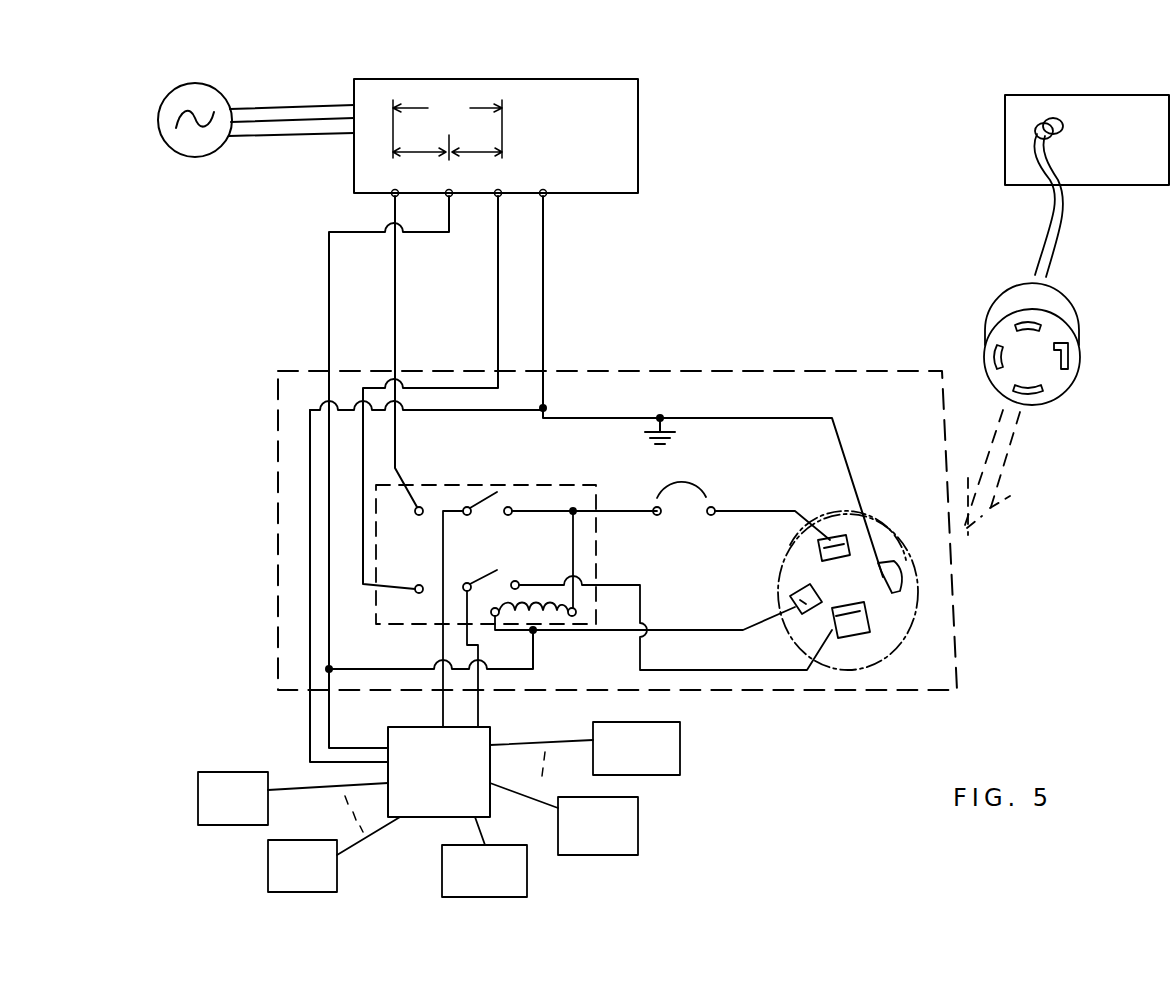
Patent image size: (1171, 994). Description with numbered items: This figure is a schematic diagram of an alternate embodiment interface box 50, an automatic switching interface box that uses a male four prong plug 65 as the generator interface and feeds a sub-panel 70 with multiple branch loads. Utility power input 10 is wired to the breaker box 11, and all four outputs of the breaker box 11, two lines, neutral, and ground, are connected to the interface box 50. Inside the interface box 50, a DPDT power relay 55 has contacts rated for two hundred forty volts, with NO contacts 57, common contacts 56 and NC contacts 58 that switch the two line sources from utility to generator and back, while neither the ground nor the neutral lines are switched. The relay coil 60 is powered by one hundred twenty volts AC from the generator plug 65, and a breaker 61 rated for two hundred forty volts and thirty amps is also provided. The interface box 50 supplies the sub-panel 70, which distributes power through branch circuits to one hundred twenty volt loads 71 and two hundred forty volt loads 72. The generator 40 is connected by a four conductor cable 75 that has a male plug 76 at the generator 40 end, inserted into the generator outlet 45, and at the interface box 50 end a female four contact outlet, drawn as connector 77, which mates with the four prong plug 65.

The utility power input 10 is at (236, 93).
The breaker box 11 is at (580, 70).
The generator 40 is at (1077, 113).
The outlet 45 is at (1073, 122).
The alternate embodiment interface box 50 is at (730, 360).
The DPDT power relay 55 is at (553, 474).
The common contacts 56 is at (484, 530).
The NO contacts 57 is at (398, 550).
The NC contacts 58 is at (533, 553).
The coil 60 is at (500, 599).
The breaker 61 is at (705, 475).
The male four prong plug 65 is at (890, 514).
The sub-panel 70 is at (503, 727).
The 120 volt loads 71 is at (216, 760).
The 240 volt loads 72 is at (690, 746).
The four conductor cable 75 is at (1068, 218).
The male plug 76 is at (1048, 112).
The NEMA L14-30 connector 77 is at (1060, 298).